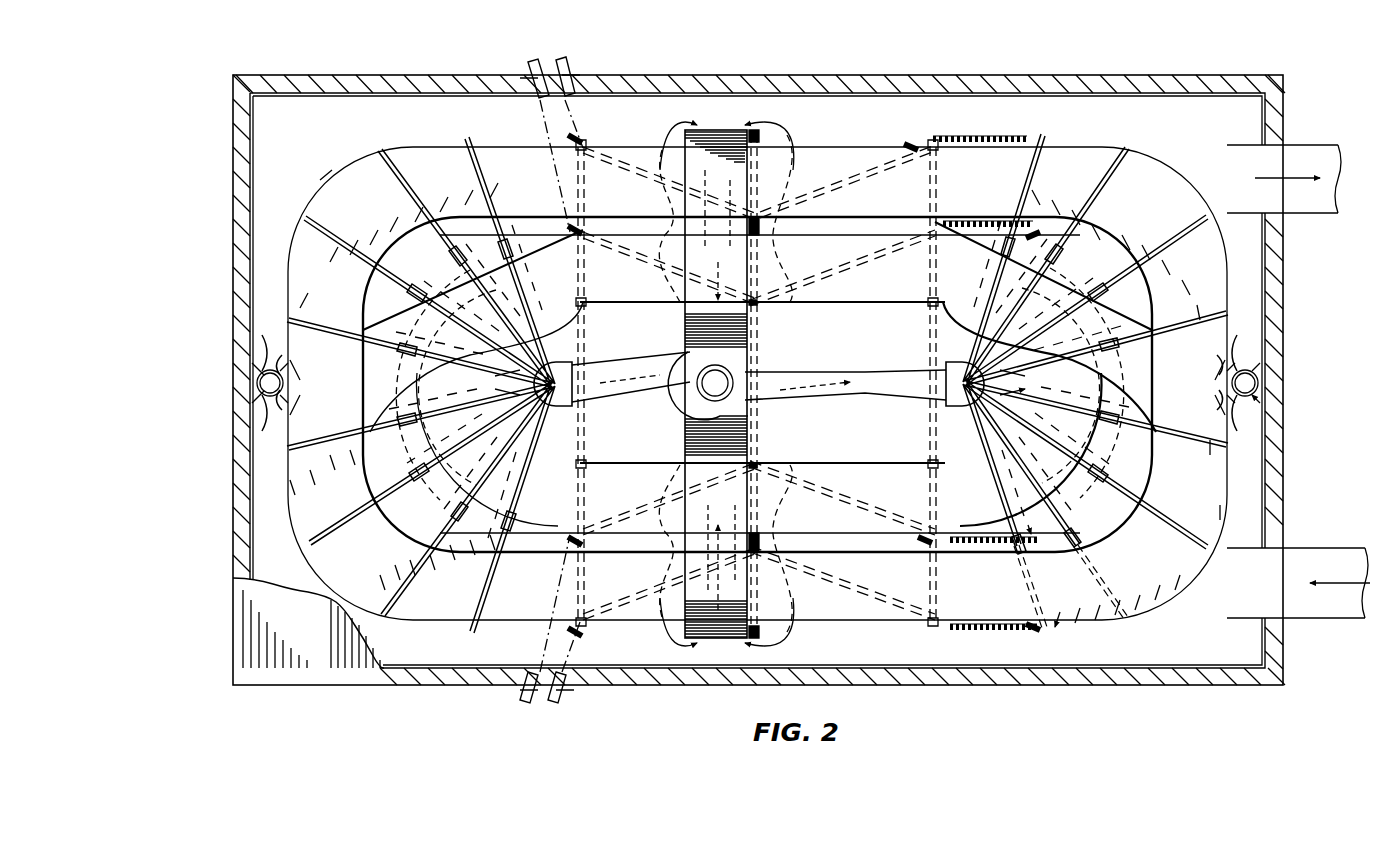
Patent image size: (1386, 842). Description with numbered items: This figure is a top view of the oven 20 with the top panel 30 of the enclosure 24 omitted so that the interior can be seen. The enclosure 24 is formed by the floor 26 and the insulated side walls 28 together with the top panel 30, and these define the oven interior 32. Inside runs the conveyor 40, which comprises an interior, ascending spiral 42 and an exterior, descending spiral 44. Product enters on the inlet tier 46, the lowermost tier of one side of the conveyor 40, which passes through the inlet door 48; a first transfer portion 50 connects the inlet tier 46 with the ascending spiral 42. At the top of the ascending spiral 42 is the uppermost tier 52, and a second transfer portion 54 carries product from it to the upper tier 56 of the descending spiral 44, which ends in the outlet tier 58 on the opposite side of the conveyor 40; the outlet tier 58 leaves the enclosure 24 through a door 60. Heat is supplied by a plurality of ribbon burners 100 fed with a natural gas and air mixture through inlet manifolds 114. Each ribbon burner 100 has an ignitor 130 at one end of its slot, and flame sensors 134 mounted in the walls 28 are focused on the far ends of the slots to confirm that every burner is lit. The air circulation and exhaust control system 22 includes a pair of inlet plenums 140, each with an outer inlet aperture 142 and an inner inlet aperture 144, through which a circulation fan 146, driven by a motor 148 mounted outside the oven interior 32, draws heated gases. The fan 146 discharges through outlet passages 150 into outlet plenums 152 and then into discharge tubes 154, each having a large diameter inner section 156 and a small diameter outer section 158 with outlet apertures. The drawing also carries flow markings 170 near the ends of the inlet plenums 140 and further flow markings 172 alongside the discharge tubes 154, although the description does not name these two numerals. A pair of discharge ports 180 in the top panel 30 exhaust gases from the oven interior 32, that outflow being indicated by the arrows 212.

The oven 20 is at (368, 54).
The air circulation and exhaust control system 22 is at (674, 441).
The enclosure 24 is at (236, 210).
The floor 26 is at (294, 138).
The walls 28 is at (239, 456).
The top panel 30 is at (318, 656).
The oven interior 32 is at (468, 110).
The conveyor 40 is at (290, 259).
The interior, ascending spiral 42 is at (554, 308).
The exterior, descending spiral 44 is at (851, 144).
The inlet tier 46 is at (1239, 584).
The inlet door 48 is at (1257, 616).
The first transfer portion 50 is at (399, 376).
The uppermost tier 52 is at (862, 303).
The second transfer portion 54 is at (1110, 310).
The upper tier 56 is at (836, 614).
The outlet tier 58 is at (1229, 176).
The door 60 is at (1269, 151).
The ribbon burners 100 is at (862, 170).
The inlet manifold 114 is at (992, 136).
The ignitor 130 is at (922, 146).
The flame sensors 134 is at (543, 63).
The inlet plenums 140 is at (748, 333).
The outer inlet aperture 142 is at (727, 128).
The inner inlet aperture 144 is at (716, 387).
The circulation fan 146 is at (692, 354).
The motor 148 is at (733, 376).
The outlet passages 150 is at (632, 382).
The outlet plenums 152 is at (574, 400).
The discharge tubes 154 is at (487, 384).
The inner section 156 is at (1104, 445).
The outer section 158 is at (467, 138).
The return flow 170 is at (790, 125).
The flow arrows 172 is at (506, 202).
The discharge ports 180 is at (298, 388).
The arrows 212 is at (250, 402).